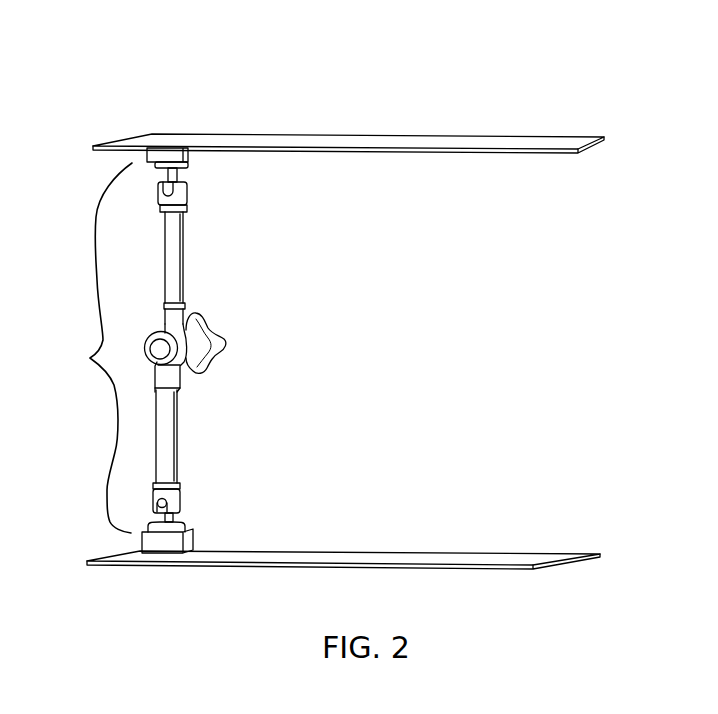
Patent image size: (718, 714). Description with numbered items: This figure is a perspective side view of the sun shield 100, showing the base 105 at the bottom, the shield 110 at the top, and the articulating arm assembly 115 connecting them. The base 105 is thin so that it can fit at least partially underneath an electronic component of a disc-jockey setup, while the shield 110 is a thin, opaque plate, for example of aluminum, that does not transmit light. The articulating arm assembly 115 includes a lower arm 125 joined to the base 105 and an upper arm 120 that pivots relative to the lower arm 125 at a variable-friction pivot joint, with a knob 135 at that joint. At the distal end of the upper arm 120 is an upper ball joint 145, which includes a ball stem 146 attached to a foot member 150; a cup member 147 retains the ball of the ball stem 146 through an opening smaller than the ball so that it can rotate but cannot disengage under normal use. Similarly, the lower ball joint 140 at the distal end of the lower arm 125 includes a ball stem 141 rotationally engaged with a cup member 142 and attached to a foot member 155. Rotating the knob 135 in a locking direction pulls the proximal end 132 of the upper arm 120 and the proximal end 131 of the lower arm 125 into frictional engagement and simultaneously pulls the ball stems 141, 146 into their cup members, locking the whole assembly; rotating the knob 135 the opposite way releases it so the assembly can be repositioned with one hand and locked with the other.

The sun shield 100 is at (698, 58).
The base 105 is at (522, 146).
The shield 110 is at (540, 562).
The articulating arm assembly 115 is at (152, 350).
The upper arm 120 is at (177, 423).
The lower arm 125 is at (183, 250).
The proximal end of the lower arm 131 is at (151, 334).
The proximal end of the upper arm 132 is at (180, 364).
The knob 135 is at (218, 343).
The lower ball joint 140 is at (184, 216).
The ball stem 141 is at (165, 181).
The cup member 142 is at (162, 216).
The upper ball joint 145 is at (185, 500).
The ball stem 146 is at (156, 513).
The cup member 147 is at (177, 504).
The foot member 150 is at (193, 538).
The foot member 155 is at (198, 153).